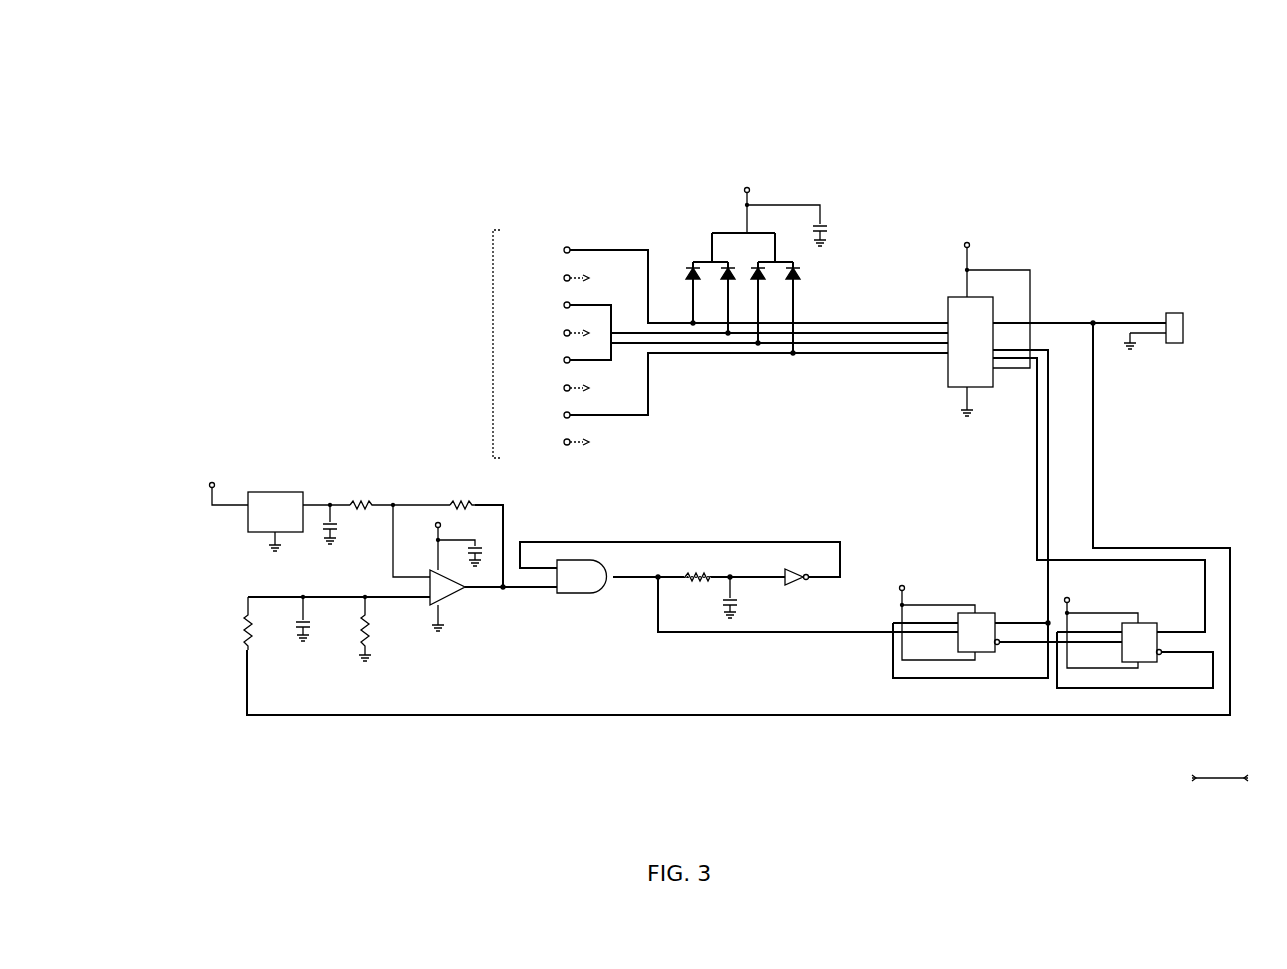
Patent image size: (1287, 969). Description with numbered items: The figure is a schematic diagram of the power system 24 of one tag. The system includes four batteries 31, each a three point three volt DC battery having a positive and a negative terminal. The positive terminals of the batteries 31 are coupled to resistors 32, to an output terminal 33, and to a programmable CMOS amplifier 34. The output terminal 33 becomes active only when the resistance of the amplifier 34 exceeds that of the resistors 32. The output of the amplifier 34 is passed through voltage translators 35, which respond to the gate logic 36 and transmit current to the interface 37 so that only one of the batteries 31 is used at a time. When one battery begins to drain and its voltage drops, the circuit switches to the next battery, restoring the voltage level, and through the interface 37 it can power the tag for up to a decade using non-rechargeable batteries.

The power system 24 is at (350, 48).
The batteries 31 is at (492, 345).
The resistors 32 is at (793, 262).
The output terminal 33 is at (752, 190).
The programmable CMOS amplifier 34 is at (975, 318).
The voltage translators 35 is at (977, 665).
The gate logic 36 is at (860, 732).
The interface 37 is at (1175, 312).